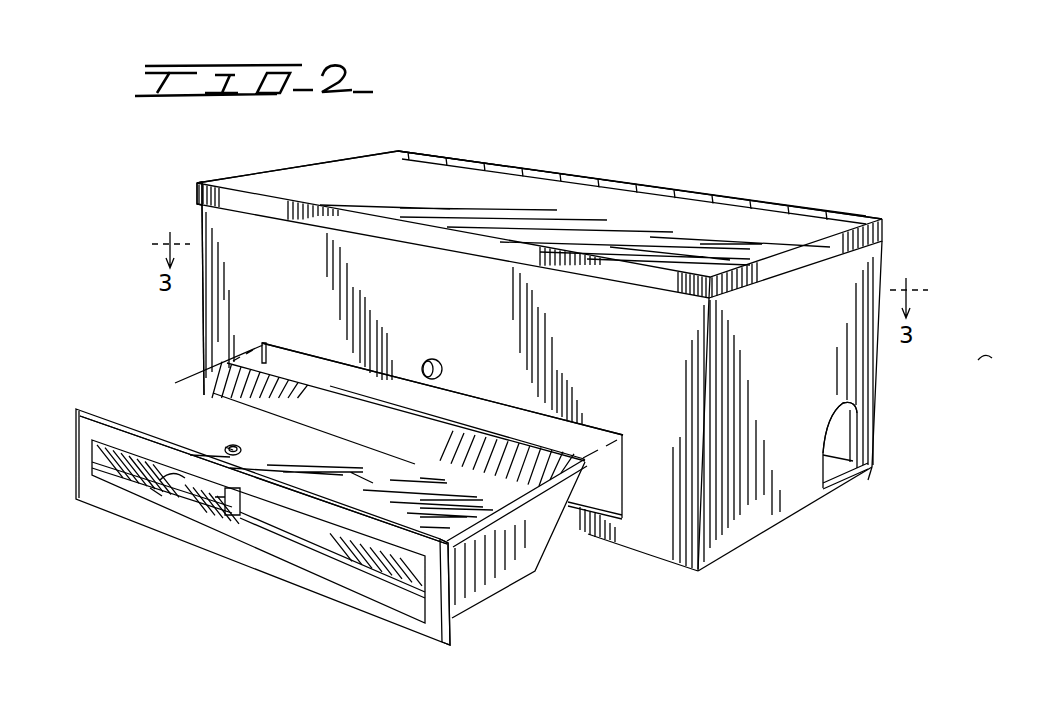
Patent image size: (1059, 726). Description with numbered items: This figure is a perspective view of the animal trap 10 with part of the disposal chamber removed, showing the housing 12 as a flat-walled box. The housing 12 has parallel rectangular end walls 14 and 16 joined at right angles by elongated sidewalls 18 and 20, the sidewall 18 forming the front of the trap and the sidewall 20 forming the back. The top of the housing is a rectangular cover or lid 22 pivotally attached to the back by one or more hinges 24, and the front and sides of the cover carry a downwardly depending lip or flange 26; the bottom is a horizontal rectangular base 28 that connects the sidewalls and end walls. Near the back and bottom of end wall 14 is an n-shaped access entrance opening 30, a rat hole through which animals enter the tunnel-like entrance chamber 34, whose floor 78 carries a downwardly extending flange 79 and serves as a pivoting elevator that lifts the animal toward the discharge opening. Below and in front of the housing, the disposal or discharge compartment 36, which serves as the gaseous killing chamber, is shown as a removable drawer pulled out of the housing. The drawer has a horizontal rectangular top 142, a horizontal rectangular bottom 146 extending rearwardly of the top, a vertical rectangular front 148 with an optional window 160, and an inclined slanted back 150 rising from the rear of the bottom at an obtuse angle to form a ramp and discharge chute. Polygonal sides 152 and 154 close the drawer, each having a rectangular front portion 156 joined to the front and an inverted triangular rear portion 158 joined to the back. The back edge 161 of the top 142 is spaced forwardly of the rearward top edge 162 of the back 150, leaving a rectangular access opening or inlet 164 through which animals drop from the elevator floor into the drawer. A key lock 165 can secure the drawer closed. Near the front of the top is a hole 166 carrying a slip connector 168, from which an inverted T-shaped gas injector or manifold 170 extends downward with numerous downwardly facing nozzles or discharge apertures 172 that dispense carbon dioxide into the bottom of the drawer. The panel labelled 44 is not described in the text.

The animal trap 10 is at (893, 231).
The housing 12 is at (700, 572).
The end wall 14 is at (742, 545).
The end wall 16 is at (202, 219).
The sidewall (front) 18 is at (657, 562).
The sidewall (back) 20 is at (410, 150).
The cover or lid 22 is at (302, 168).
The hinge 24 is at (612, 177).
The lip or flange 26 is at (196, 192).
The base 28 is at (872, 467).
The access entrance opening 30 is at (862, 438).
The entrance chamber 34 is at (848, 414).
The disposal or discharge compartment 36 is at (328, 485).
The front panel 44 is at (78, 428).
The floor 78 is at (825, 455).
The flange 79 is at (845, 478).
The top 142 is at (132, 411).
The bottom 146 is at (497, 590).
The front 148 is at (265, 570).
The back 150 is at (550, 556).
The side 152 is at (545, 540).
The side 154 is at (202, 372).
The rectangular front portion 156 is at (466, 605).
The inverted triangular rear portion 158 is at (563, 494).
The window 160 is at (402, 593).
The back edge of the top 161 is at (334, 437).
The rearward top edge of the back 162 is at (473, 433).
The access opening or inlet 164 is at (416, 432).
The key lock 165 is at (435, 359).
The hole 166 is at (235, 445).
The slip connector 168 is at (225, 447).
The gas injector or manifold 170 is at (228, 520).
The nozzles or discharge apertures 172 is at (158, 492).